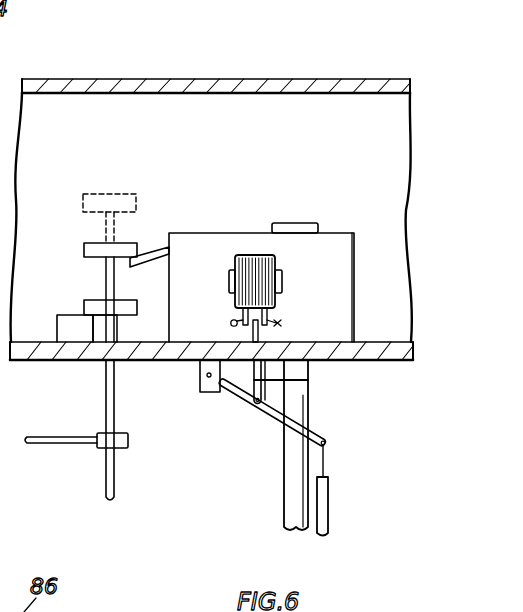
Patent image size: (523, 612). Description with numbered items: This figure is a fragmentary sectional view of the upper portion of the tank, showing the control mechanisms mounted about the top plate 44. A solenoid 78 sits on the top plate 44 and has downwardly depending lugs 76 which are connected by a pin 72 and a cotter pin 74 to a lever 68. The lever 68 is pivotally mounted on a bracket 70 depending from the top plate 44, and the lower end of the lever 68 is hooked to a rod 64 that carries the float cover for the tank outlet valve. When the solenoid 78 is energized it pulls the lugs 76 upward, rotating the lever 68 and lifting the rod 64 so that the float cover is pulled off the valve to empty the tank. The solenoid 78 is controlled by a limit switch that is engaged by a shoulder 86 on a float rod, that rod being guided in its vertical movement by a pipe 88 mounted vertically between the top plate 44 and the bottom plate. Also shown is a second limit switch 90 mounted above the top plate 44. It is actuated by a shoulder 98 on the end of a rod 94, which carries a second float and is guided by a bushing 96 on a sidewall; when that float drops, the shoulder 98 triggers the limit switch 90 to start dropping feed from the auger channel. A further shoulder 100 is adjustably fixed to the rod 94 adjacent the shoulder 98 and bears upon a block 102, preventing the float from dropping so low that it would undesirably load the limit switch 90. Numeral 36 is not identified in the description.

The top wall of housing 36 is at (256, 78).
The top plate 44 is at (80, 362).
The rod 64 is at (329, 509).
The lever 68 is at (273, 420).
The bracket 70 is at (212, 393).
The pin 72 is at (308, 386).
The cotter pin 74 is at (282, 323).
The lugs 76 is at (231, 322).
The solenoid 78 is at (253, 255).
The shoulder 86 is at (298, 222).
The pipe 88 is at (308, 416).
The second limit switch 90 is at (154, 249).
The rod 94 is at (115, 408).
The bushing 96 is at (127, 448).
The shoulder 98 is at (84, 242).
The shoulder 100 is at (85, 300).
The block 102 is at (57, 323).